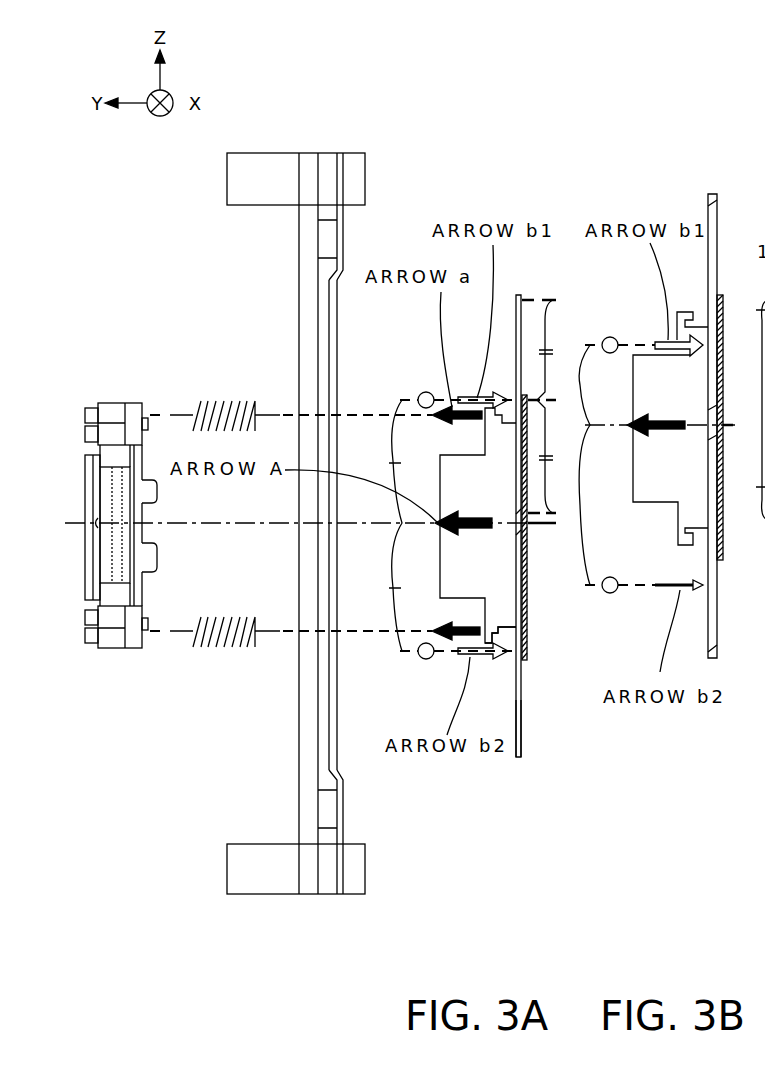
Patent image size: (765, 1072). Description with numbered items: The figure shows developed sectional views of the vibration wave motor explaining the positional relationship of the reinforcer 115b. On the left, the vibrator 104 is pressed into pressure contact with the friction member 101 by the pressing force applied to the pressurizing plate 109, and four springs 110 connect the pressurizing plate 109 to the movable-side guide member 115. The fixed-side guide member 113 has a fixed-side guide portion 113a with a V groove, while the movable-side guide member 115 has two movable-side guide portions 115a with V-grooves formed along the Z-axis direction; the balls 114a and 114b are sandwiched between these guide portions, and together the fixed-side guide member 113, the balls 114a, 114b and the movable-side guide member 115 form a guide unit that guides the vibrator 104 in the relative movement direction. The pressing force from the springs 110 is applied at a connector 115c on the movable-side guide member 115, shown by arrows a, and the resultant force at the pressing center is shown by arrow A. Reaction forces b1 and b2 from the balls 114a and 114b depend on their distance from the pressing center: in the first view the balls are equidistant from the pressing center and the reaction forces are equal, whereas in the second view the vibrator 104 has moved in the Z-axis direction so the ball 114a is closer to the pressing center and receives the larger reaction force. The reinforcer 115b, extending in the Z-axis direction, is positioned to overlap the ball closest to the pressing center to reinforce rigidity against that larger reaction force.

In FIG. 3A, the friction member 101 is at (303, 770).
In FIG. 3A, the vibrator 104 is at (156, 458).
In FIG. 3A, the pressurizing plate 109 is at (85, 470).
In FIG. 3A, the springs 110 is at (213, 650).
In FIG. 3A, the fixed-side guide member 113 is at (342, 807).
In FIG. 3A, the fixed-side guide portion 113a is at (338, 752).
In FIG. 3A, the ball 114a is at (421, 393).
In FIG. 3B, the ball 114a is at (610, 337).
In FIG. 3A, the ball 114b is at (421, 659).
In FIG. 3B, the ball 114b is at (608, 593).
In FIG. 3A, the movable-side guide member 115 is at (518, 297).
In FIG. 3A, the movable-side guide portion 115a is at (521, 725).
In FIG. 3A, the reinforcer 115b is at (530, 645).
In FIG. 3A, the connector 115c is at (486, 657).